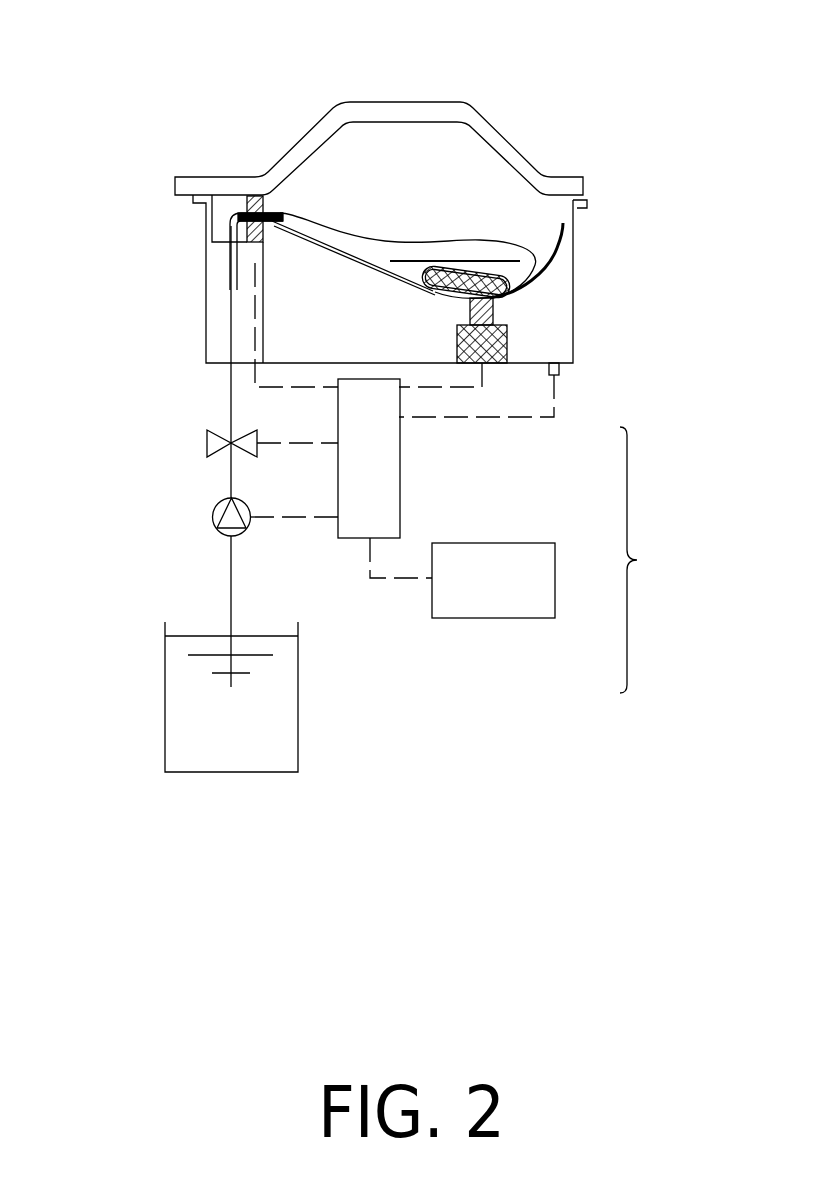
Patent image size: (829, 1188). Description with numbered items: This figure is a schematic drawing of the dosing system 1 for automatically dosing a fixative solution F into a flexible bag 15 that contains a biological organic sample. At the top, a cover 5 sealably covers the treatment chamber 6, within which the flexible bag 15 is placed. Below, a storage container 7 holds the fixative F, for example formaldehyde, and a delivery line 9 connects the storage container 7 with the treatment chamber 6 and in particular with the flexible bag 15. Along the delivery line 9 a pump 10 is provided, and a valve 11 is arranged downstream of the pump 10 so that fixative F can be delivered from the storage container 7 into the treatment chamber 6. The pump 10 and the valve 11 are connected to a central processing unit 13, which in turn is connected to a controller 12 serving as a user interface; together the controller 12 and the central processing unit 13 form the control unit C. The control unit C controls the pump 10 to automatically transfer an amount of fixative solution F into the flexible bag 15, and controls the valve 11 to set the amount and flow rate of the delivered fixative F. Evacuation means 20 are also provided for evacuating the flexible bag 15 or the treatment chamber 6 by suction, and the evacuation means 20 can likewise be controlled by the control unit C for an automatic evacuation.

The dosing system 1 is at (698, 35).
The cover 5 is at (497, 136).
The treatment chamber 6 is at (552, 319).
The storage container 7 is at (180, 690).
The delivery line 9 is at (231, 578).
The pump 10 is at (213, 526).
The valve 11 is at (207, 437).
The controller 12 is at (492, 607).
The central processing unit 13 is at (385, 447).
The flexible bag 15 is at (377, 240).
The evacuation means 20 is at (559, 370).
The control unit C is at (640, 560).
The fixative solution F is at (268, 656).